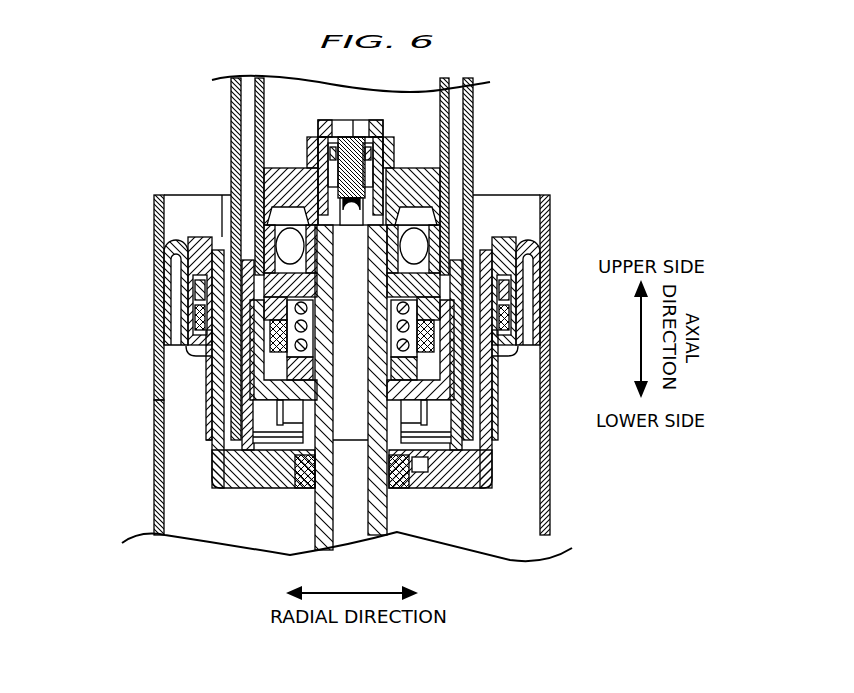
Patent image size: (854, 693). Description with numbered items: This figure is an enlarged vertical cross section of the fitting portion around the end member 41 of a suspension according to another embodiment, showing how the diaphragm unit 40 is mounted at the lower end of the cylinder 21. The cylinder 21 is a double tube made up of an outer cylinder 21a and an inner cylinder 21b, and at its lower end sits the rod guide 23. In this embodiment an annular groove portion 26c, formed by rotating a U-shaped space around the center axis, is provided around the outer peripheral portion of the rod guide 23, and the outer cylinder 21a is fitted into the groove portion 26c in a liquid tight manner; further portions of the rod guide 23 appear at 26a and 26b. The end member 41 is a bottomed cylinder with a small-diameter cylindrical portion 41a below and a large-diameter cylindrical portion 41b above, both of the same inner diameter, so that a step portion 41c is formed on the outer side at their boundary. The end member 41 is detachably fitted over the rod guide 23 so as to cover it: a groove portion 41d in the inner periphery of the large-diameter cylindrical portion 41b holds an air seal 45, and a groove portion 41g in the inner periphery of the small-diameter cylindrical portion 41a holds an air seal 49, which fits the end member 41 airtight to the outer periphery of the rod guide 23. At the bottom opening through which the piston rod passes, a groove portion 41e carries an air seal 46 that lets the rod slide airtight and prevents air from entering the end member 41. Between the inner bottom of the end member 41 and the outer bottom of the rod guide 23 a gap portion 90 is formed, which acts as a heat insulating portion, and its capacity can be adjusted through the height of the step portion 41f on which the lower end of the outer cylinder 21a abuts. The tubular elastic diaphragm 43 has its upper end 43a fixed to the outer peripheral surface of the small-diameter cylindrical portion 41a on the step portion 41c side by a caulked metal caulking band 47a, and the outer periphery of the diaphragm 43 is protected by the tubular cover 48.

The diaphragm unit 40 is at (131, 365).
The diaphragm 43 is at (157, 405).
The cover 48 is at (157, 478).
The cylinder 21 is at (402, 259).
The outer cylinder 21a is at (476, 166).
The inner cylinder 21b is at (452, 141).
The rod guide 23 is at (440, 382).
The end member 41 is at (136, 283).
The small-diameter cylindrical portion 41a is at (190, 278).
The large-diameter cylindrical portion 41b is at (166, 246).
The step portion 41c is at (195, 306).
The groove portion 41d is at (500, 236).
The groove portion 41e is at (297, 470).
The step portion 41f is at (207, 440).
The groove portion 41g is at (498, 360).
The upper end of the diaphragm 43a is at (196, 346).
The air seal 45 is at (517, 280).
The caulking band 47a is at (150, 322).
The air seal 49 is at (500, 346).
The cylinder upper wall 26a is at (252, 262).
The cylinder bottom 26b is at (268, 465).
The groove portion 26c is at (233, 470).
The air seal 46 is at (392, 475).
The gap portion 90 is at (423, 462).